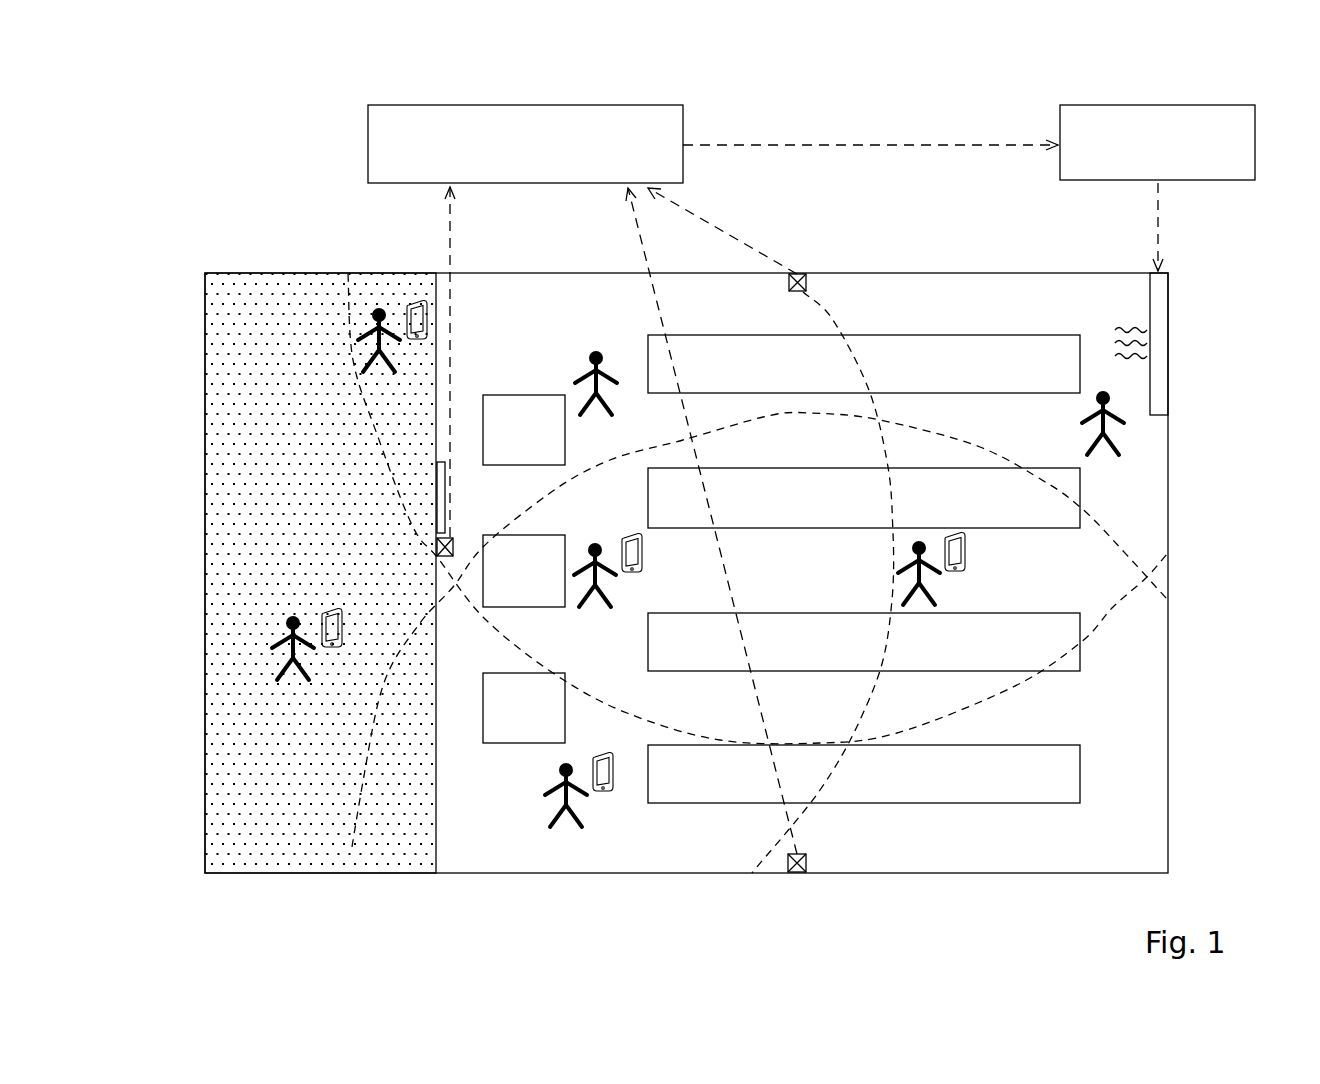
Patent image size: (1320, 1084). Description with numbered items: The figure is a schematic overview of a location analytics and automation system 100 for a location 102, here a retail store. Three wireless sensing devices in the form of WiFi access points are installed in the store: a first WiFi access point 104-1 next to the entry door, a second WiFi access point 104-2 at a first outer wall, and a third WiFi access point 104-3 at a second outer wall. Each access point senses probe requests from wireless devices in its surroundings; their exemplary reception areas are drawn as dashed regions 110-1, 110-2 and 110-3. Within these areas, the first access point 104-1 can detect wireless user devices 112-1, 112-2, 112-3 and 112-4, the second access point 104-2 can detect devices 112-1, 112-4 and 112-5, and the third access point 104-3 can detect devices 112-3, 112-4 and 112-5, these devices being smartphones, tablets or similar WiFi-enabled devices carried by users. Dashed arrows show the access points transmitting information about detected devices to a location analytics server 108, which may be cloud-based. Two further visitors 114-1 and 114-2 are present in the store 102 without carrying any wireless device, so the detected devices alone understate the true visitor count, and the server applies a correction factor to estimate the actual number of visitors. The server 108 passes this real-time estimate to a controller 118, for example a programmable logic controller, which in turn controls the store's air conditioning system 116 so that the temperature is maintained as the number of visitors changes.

The location analytics and automation system 100 is at (268, 121).
The location (retail store) 102 is at (437, 497).
The first WiFi access point 104-1 is at (437, 547).
The second WiFi access point 104-2 is at (803, 272).
The third WiFi access point 104-3 is at (797, 872).
The location analytics server 108 is at (527, 105).
The reception area 110-1 is at (832, 320).
The reception area 110-2 is at (347, 290).
The reception area 110-3 is at (353, 847).
The wireless user device 112-1 is at (410, 307).
The wireless user device 112-2 is at (320, 618).
The wireless user device 112-3 is at (605, 793).
The wireless user device 112-4 is at (633, 573).
The wireless user device 112-5 is at (968, 560).
The visitor 114-1 is at (584, 360).
The visitor 114-2 is at (1105, 423).
The air conditioning system 116 is at (1158, 333).
The controller 118 is at (1162, 105).